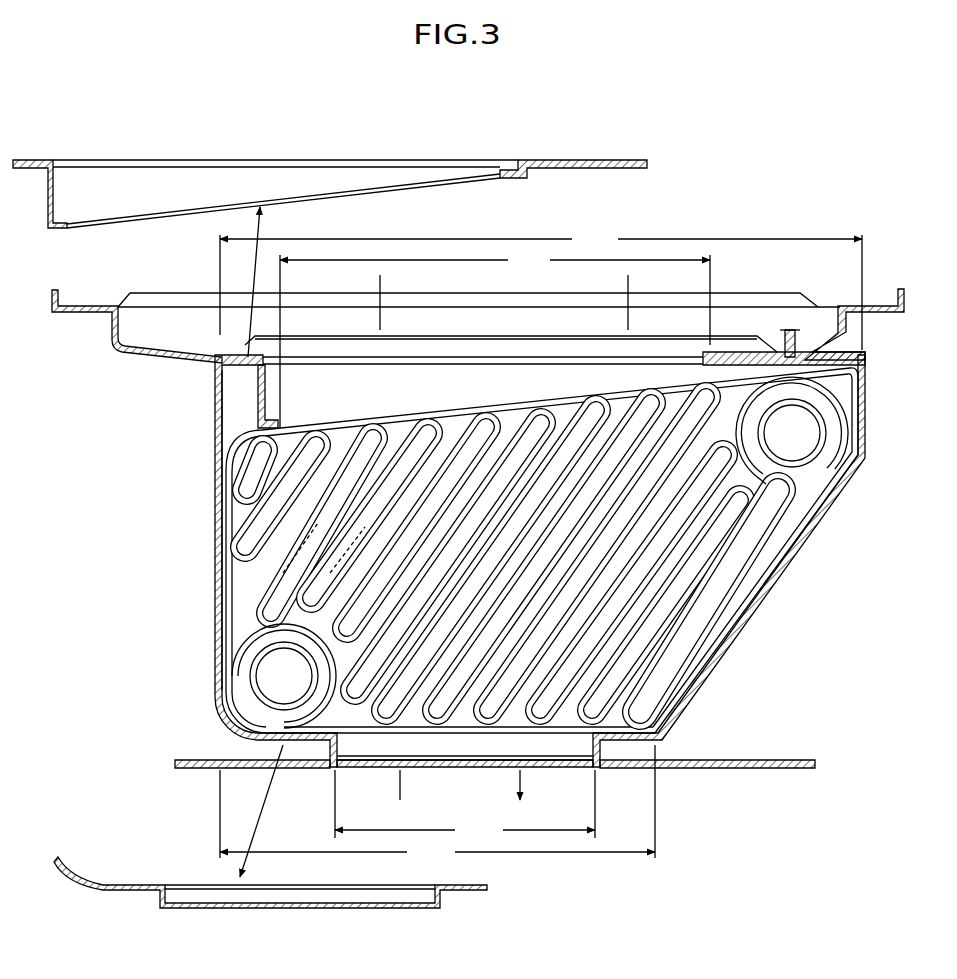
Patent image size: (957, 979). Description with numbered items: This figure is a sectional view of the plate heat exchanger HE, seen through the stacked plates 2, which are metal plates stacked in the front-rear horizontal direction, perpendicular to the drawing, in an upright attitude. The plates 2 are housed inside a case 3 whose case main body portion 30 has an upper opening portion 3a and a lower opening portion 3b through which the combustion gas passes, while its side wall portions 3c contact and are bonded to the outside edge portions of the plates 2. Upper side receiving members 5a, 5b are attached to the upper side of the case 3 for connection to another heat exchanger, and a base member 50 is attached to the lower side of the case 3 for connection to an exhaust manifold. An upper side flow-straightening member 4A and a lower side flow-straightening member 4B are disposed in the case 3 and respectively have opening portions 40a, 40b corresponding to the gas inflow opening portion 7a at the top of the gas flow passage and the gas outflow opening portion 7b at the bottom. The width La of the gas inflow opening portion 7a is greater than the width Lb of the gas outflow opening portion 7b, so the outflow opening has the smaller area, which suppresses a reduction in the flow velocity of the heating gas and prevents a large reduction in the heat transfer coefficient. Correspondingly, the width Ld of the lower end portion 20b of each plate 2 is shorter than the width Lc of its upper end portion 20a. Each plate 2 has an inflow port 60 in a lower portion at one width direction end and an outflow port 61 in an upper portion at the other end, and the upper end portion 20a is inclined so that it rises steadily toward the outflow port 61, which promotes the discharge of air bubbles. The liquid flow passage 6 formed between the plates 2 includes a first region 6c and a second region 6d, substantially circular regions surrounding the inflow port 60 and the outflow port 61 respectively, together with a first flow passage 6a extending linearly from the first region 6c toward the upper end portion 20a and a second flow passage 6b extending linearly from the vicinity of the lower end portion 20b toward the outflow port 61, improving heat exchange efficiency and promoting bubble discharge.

The plate heat exchanger HE is at (240, 118).
The plate 2 is at (323, 418).
The case 3 is at (213, 440).
The opening portion 3a is at (395, 357).
The opening portion 3b is at (417, 765).
The side wall portion 3c is at (805, 540).
The case main body portion 30 is at (218, 478).
The upper side flow-straightening member 4A is at (557, 162).
The lower side flow-straightening member 4B is at (218, 737).
The opening portion 40a is at (287, 178).
The opening portion 40b is at (362, 757).
The upper side receiving member 5a is at (882, 303).
The upper side receiving member 5b is at (786, 330).
The liquid flow passage 6 is at (415, 442).
The first flow passage 6a is at (388, 472).
The second flow passage 6b is at (737, 577).
The first region 6c is at (240, 680).
The second region 6d is at (820, 460).
The gas inflow opening portion 7a is at (458, 425).
The gas outflow opening portion 7b is at (455, 727).
The upper end portion 20a is at (507, 417).
The lower end portion 20b is at (530, 730).
The base member 50 is at (738, 760).
The inflow port 60 is at (275, 670).
The outflow port 61 is at (800, 432).
The width of upper end portion Lc is at (541, 286).
The width of gas inflow opening portion La is at (495, 336).
The width of gas outflow opening portion Lb is at (465, 807).
The width of lower end portion Ld is at (437, 805).